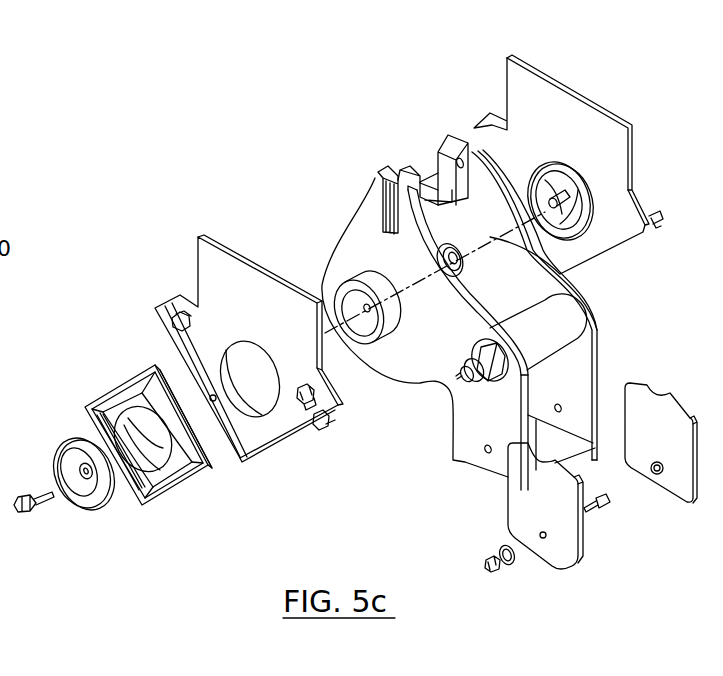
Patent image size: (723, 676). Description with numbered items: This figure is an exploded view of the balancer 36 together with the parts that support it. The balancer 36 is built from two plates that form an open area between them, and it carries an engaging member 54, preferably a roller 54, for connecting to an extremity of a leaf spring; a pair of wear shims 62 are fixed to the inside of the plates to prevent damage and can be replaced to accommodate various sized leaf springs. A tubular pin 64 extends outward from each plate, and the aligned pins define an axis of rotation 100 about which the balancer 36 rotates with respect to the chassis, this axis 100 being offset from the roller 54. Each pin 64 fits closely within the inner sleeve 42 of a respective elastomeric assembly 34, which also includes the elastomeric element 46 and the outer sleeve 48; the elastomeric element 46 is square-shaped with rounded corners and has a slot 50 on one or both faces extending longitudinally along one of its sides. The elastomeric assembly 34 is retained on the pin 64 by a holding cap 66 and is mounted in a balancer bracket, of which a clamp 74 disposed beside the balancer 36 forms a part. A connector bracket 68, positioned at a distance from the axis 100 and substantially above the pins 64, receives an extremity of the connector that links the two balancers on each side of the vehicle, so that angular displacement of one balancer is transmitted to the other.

The elastomeric assembly 34 is at (149, 442).
The balancer 36 is at (492, 279).
The inner sleeve 42 is at (143, 457).
The elastomeric element 46 is at (170, 477).
The outer sleeve 48 is at (197, 455).
The slot 50 is at (133, 485).
The engaging member 54 is at (552, 357).
The wear shims 62 is at (678, 478).
The pin 64 is at (372, 287).
The holding cap 66 is at (67, 438).
The connector bracket 68 is at (452, 152).
The clamp 74 is at (242, 364).
The axis of rotation 100 is at (563, 280).